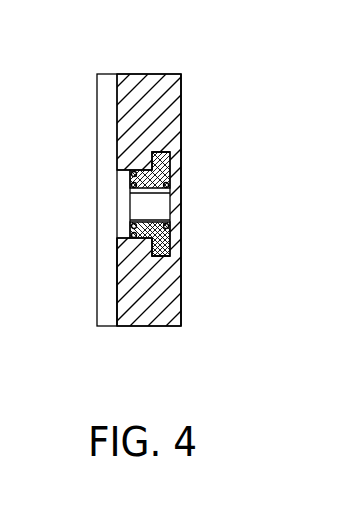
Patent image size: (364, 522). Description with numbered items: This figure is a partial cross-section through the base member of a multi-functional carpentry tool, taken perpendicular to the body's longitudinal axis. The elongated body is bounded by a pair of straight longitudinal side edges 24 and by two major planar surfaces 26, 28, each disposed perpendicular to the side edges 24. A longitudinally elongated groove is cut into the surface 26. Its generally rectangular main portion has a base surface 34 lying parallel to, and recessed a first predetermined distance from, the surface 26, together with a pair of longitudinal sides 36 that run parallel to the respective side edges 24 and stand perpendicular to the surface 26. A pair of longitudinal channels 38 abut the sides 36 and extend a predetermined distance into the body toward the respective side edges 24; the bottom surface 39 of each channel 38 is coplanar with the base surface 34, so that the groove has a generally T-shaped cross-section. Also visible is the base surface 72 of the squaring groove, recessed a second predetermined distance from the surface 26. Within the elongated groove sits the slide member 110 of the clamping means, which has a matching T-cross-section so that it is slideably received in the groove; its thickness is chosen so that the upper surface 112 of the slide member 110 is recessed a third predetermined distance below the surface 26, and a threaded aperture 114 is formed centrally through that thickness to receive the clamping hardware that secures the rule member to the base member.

The longitudinal side edges 24 is at (155, 74).
The major planar surface 26 is at (96, 93).
The major planar surface 28 is at (182, 85).
The base surface 34 is at (170, 176).
The longitudinal sides 36 is at (128, 176).
The longitudinal channels 38 is at (163, 155).
The bottom surface 39 is at (167, 167).
The base surface 72 is at (116, 87).
The slide member 110 is at (120, 283).
The upper surface 112 is at (128, 222).
The threaded aperture 114 is at (128, 193).